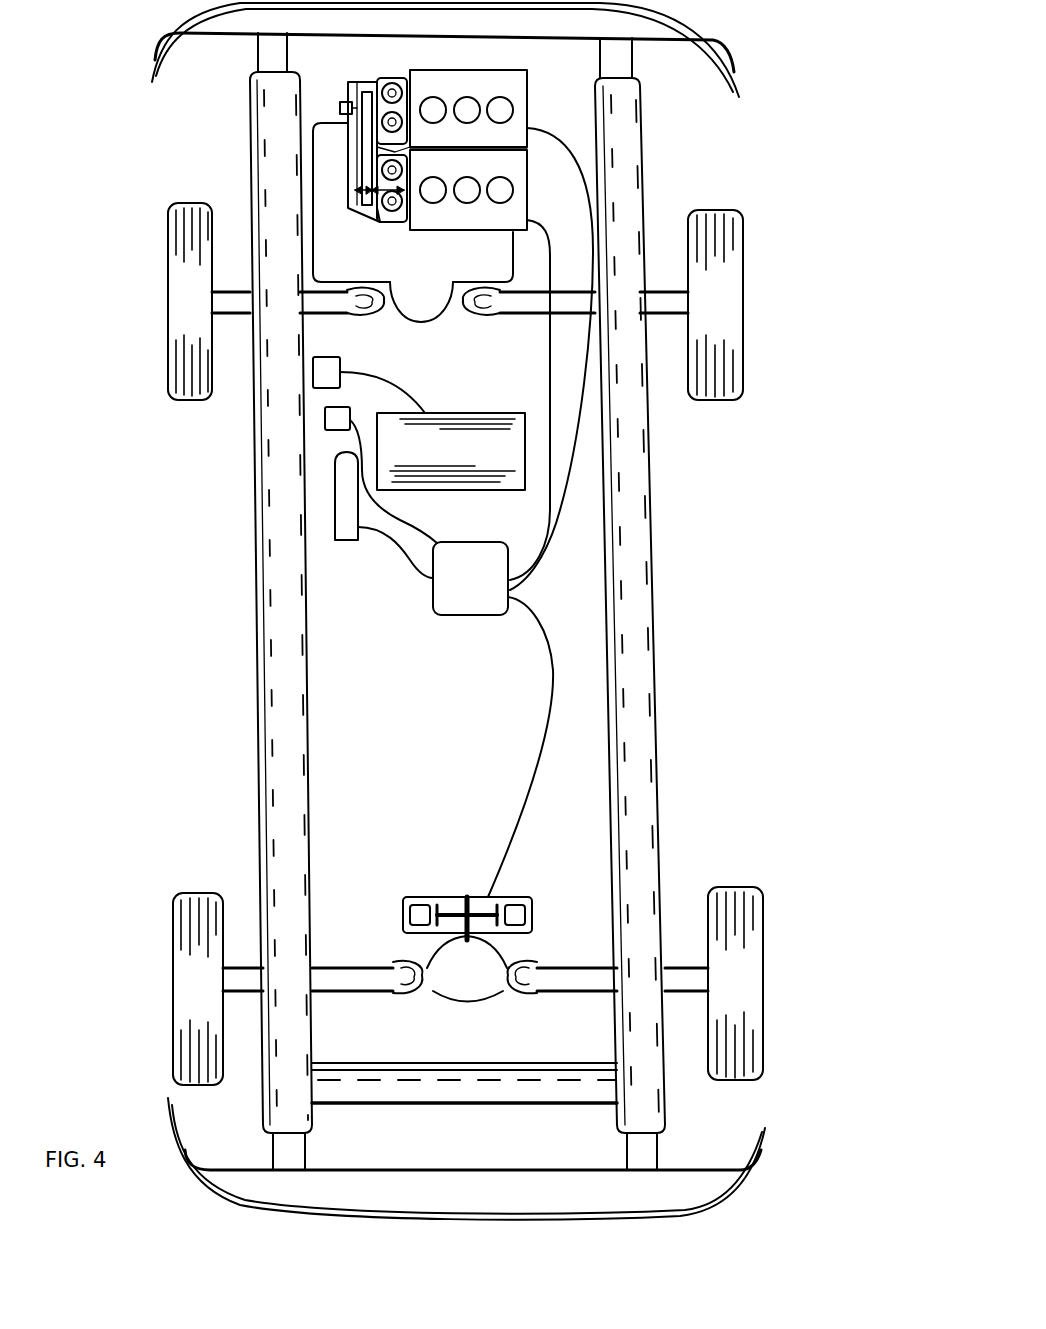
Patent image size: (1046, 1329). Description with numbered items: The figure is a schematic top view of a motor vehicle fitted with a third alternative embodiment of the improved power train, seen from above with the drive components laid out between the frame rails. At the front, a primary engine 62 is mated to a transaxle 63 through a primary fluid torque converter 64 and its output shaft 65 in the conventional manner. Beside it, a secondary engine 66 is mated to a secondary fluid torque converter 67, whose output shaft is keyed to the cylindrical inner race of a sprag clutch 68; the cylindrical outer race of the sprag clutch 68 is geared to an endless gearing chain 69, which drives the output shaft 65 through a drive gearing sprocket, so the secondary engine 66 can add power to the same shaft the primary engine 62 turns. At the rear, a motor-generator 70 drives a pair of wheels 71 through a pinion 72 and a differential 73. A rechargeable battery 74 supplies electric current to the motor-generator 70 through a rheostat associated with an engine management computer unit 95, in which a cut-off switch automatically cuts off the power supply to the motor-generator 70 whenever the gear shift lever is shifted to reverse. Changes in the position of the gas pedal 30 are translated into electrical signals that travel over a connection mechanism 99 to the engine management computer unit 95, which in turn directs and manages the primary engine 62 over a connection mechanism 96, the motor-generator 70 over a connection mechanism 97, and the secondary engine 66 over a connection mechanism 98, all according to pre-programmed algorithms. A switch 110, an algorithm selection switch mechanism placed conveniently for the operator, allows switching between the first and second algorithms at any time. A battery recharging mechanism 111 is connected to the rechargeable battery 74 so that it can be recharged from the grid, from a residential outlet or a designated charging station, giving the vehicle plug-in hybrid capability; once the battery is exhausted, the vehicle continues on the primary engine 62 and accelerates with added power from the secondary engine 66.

The gas pedal 30 is at (337, 498).
The primary engine 62 is at (527, 200).
The transaxle 63 is at (430, 302).
The primary fluid torque converter 64 is at (381, 220).
The output shaft 65 is at (356, 190).
The secondary engine 66 is at (527, 113).
The secondary fluid torque converter 67 is at (387, 77).
The sprag clutch 68 is at (348, 97).
The endless gearing chain 69 is at (362, 143).
The motor-generator 70 is at (478, 897).
The wheels 71 is at (173, 968).
The pinion 72 is at (477, 936).
The differential 73 is at (452, 974).
The rechargeable battery 74 is at (429, 459).
The engine management computer unit 95 is at (456, 587).
The connection mechanism 96 is at (548, 395).
The connection mechanism 97 is at (540, 760).
The connection mechanism 98 is at (545, 574).
The connection mechanism 99 is at (401, 565).
The switch 110 is at (325, 419).
The battery recharging mechanism 111 is at (313, 375).